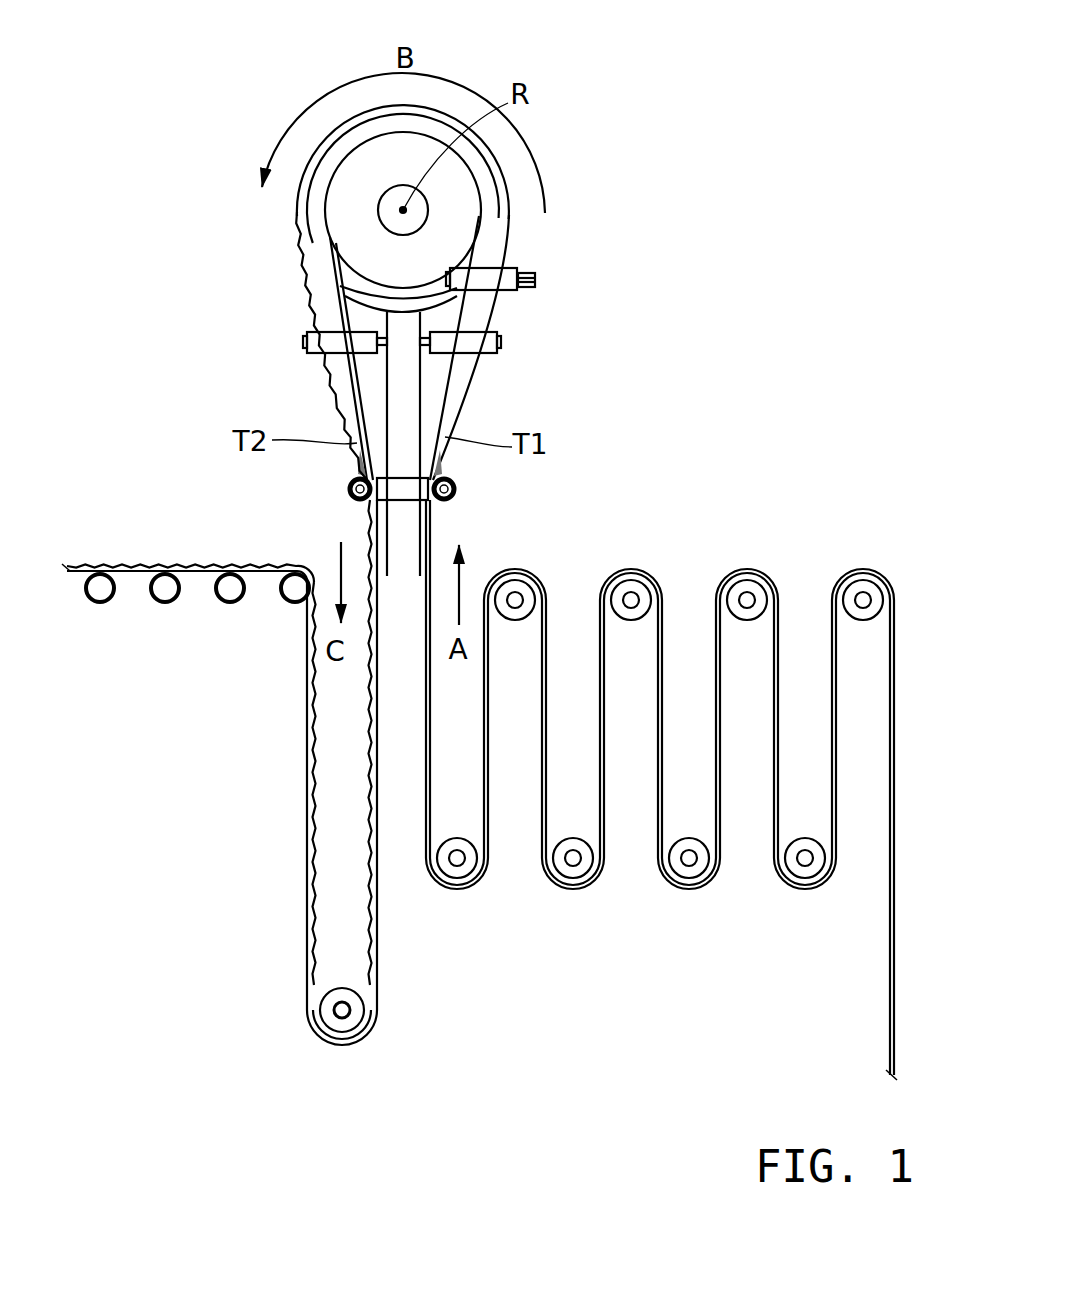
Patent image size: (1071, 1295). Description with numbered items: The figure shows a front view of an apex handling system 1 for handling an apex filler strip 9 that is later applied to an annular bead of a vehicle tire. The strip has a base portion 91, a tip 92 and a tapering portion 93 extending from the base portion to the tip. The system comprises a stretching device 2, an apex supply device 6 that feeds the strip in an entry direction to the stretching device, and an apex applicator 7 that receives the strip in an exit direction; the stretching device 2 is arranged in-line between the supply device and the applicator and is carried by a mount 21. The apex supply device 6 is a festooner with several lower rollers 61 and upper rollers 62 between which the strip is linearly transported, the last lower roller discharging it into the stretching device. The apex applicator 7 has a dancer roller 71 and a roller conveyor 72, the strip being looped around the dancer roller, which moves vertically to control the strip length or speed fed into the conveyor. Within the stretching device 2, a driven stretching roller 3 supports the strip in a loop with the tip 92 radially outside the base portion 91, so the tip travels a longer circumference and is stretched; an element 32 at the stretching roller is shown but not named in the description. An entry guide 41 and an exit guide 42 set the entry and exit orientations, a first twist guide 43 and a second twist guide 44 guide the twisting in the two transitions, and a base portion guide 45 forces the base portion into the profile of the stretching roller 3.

The apex handling system 1 is at (240, 90).
The stretching device 2 is at (560, 178).
The stretching roller 3 is at (502, 157).
The apex supply device 6 is at (660, 782).
The apex applicator 7 is at (222, 772).
The apex filler strip 9 is at (337, 388).
The mount 21 is at (397, 527).
The roller surface arcs 32 is at (370, 289).
The entry guide 41 is at (456, 490).
The exit guide 42 is at (348, 490).
The first twist guide 43 is at (485, 345).
The second twist guide 44 is at (322, 343).
The base portion guide 45 is at (507, 277).
The lower rollers 61 is at (705, 878).
The upper rollers 62 is at (855, 580).
The dancer roller 71 is at (335, 1012).
The roller conveyor 72 is at (168, 603).
The base portion 91 is at (360, 413).
The tip 92 is at (347, 127).
The tapering portion 93 is at (313, 240).